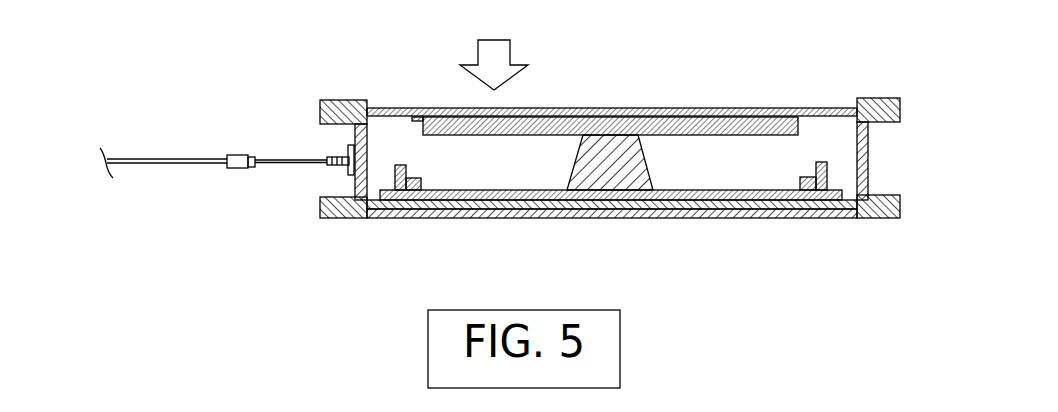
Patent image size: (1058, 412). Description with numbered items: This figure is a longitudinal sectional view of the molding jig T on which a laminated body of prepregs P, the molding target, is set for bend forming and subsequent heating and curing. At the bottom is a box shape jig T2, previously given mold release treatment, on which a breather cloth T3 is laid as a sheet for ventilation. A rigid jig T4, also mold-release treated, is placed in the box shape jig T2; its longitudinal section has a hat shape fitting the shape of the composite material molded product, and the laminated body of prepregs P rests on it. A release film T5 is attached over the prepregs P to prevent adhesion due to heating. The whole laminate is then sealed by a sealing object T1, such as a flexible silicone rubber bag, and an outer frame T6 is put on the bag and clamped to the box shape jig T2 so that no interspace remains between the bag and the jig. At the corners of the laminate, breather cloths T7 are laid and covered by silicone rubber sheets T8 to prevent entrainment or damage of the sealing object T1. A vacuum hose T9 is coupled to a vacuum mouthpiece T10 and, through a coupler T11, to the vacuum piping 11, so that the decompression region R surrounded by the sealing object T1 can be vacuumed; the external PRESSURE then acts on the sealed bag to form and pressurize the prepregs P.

The molding jig T is at (583, 104).
The sealing object T1 is at (672, 108).
The box shape jig T2 is at (668, 218).
The breather cloth T3 is at (388, 197).
The rigid jig T4 is at (577, 166).
The release film T5 is at (798, 122).
The outer frame T6 is at (348, 102).
The breather cloth T7 is at (422, 187).
The silicone rubber sheet T8 is at (410, 170).
The vacuum hose T9 is at (280, 163).
The vacuum mouthpiece T10 is at (352, 150).
The coupler T11 is at (238, 155).
The vacuum piping 11 is at (172, 166).
The prepreg P is at (667, 135).
The decompression region R is at (713, 173).
The applied pressure PRESSURE is at (510, 53).